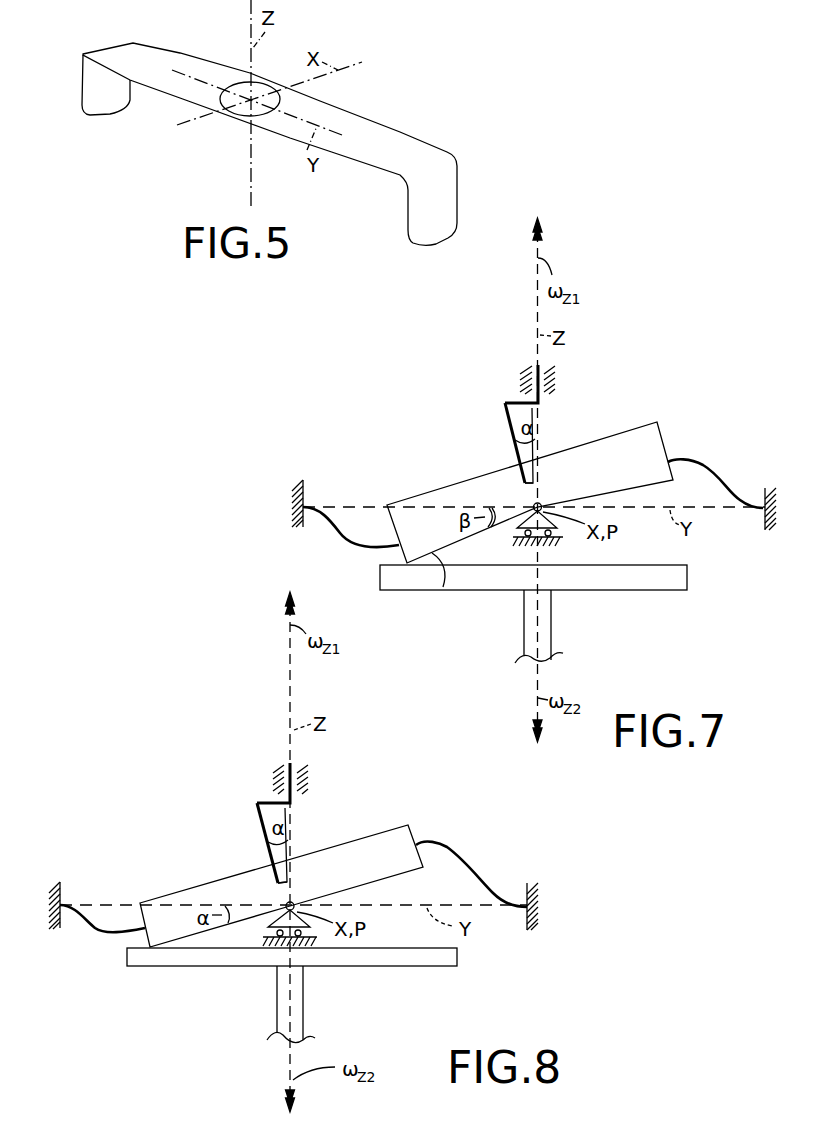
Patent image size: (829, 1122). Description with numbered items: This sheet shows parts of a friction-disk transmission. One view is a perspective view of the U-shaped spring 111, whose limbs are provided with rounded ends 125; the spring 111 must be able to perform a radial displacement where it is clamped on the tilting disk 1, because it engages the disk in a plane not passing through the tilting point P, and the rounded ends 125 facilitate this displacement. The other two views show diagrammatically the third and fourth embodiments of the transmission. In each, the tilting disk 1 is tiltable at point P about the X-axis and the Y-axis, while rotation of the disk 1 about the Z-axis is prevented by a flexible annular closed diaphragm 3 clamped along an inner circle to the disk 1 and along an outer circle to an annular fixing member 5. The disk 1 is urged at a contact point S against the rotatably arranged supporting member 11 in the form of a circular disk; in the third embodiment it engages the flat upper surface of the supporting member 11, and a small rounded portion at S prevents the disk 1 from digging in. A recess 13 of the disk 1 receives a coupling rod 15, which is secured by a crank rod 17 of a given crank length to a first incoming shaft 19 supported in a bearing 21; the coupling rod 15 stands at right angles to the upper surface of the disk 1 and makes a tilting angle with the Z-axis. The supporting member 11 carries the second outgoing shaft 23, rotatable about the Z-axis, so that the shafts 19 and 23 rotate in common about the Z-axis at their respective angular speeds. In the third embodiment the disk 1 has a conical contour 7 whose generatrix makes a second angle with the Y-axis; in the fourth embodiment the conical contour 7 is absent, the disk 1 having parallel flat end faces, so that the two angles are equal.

In FIG. 7, the tilting disk 1 is at (628, 442).
In FIG. 8, the tilting disk 1 is at (385, 840).
In FIG. 7, the flexible annular closed diaphragm 3 is at (342, 535).
In FIG. 8, the flexible annular closed diaphragm 3 is at (85, 927).
In FIG. 7, the annular fixing member 5 is at (305, 492).
In FIG. 8, the annular fixing member 5 is at (61, 895).
In FIG. 7, the conical contour 7 is at (443, 587).
In FIG. 7, the supporting member 11 is at (478, 578).
In FIG. 8, the supporting member 11 is at (402, 958).
In FIG. 7, the recess 13 is at (540, 483).
In FIG. 8, the recess 13 is at (291, 882).
In FIG. 7, the coupling rod 15 is at (513, 428).
In FIG. 8, the coupling rod 15 is at (262, 822).
In FIG. 7, the crank rod 17 is at (528, 407).
In FIG. 8, the crank rod 17 is at (288, 809).
In FIG. 7, the first incoming shaft 19 is at (535, 368).
In FIG. 8, the first incoming shaft 19 is at (288, 763).
In FIG. 7, the bearing 21 is at (552, 378).
In FIG. 8, the bearing 21 is at (306, 778).
In FIG. 7, the second outgoing shaft 23 is at (543, 622).
In FIG. 8, the second outgoing shaft 23 is at (300, 1017).
In FIG. 5, the U-shaped spring 111 is at (373, 133).
In FIG. 5, the rounded ends 125 is at (95, 118).